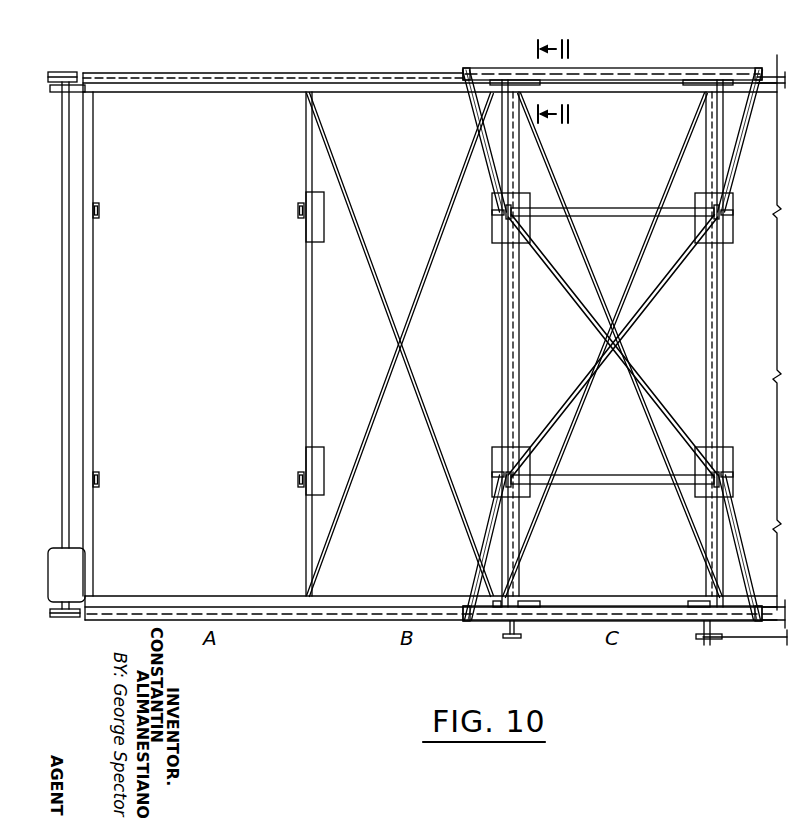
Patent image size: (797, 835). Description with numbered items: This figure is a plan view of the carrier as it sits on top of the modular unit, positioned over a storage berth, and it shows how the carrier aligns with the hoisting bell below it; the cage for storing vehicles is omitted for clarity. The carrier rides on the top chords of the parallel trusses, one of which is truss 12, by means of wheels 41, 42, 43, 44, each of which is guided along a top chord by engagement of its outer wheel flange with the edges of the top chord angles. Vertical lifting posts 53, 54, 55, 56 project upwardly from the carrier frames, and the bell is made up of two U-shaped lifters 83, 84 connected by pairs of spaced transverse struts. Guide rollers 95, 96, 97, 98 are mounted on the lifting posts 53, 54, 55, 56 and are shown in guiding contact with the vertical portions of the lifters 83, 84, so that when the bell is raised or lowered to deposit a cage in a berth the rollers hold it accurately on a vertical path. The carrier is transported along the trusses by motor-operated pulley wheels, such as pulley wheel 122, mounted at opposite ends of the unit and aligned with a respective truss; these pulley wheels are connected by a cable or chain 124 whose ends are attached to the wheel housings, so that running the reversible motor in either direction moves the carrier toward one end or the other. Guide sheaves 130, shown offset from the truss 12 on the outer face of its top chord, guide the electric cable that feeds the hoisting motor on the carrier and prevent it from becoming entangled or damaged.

The truss 12 is at (765, 637).
The wheel 41 is at (488, 622).
The wheel 42 is at (693, 623).
The wheel 43 is at (515, 68).
The wheel 44 is at (710, 68).
The vertical post 53 is at (497, 470).
The vertical post 54 is at (728, 474).
The vertical post 55 is at (733, 222).
The vertical post 56 is at (497, 216).
The U-shaped lifter 83 is at (620, 486).
The U-shaped lifter 84 is at (614, 216).
The guide roller 95 is at (510, 488).
The guide roller 96 is at (716, 488).
The guide roller 97 is at (722, 210).
The guide roller 98 is at (512, 210).
The pulley wheel 122 is at (63, 70).
The cable or chain 124 is at (245, 605).
The guide sheave 130 is at (512, 640).